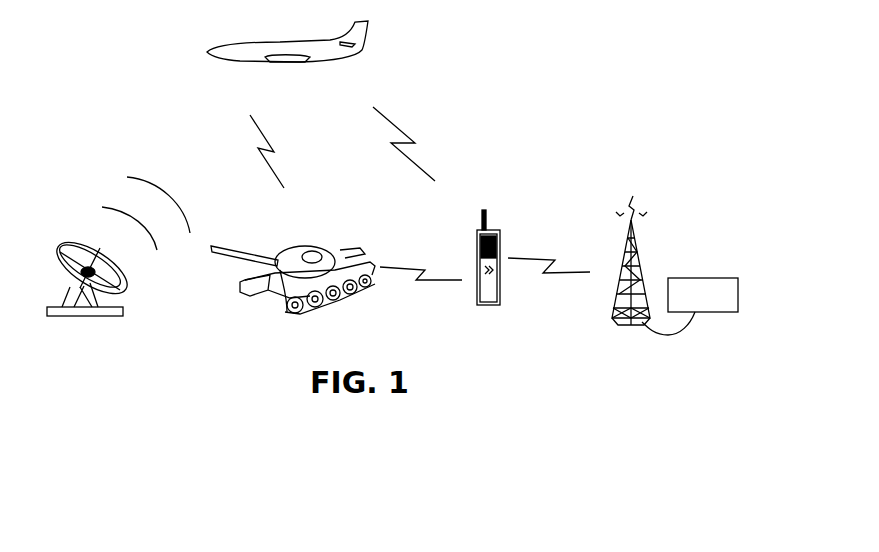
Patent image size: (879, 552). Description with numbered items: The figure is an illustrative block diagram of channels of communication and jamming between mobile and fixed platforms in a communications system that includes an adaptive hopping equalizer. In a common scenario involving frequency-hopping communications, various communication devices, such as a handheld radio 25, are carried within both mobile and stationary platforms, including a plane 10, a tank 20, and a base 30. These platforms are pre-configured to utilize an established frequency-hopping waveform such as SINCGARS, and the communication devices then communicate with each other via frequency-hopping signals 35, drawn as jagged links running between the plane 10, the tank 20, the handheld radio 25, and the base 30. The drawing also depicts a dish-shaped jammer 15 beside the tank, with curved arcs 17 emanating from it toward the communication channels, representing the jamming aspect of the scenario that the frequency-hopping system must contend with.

The plane 10 is at (398, 60).
The jammer 15 is at (102, 360).
The jamming signals 17 is at (157, 152).
The tank 20 is at (278, 328).
The handheld radio 25 is at (487, 328).
The base 30 is at (630, 338).
The frequency-hopping signals 35 is at (528, 215).